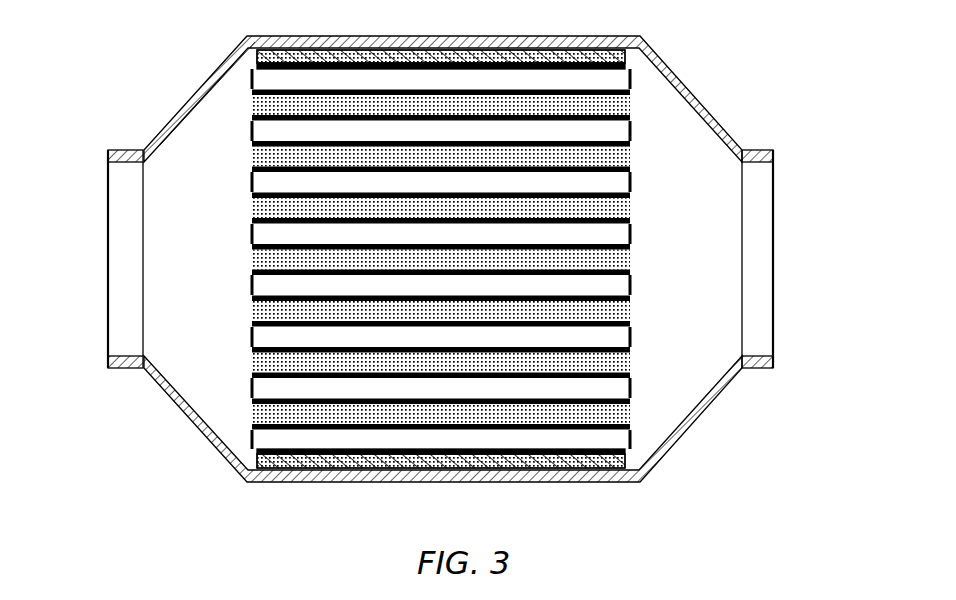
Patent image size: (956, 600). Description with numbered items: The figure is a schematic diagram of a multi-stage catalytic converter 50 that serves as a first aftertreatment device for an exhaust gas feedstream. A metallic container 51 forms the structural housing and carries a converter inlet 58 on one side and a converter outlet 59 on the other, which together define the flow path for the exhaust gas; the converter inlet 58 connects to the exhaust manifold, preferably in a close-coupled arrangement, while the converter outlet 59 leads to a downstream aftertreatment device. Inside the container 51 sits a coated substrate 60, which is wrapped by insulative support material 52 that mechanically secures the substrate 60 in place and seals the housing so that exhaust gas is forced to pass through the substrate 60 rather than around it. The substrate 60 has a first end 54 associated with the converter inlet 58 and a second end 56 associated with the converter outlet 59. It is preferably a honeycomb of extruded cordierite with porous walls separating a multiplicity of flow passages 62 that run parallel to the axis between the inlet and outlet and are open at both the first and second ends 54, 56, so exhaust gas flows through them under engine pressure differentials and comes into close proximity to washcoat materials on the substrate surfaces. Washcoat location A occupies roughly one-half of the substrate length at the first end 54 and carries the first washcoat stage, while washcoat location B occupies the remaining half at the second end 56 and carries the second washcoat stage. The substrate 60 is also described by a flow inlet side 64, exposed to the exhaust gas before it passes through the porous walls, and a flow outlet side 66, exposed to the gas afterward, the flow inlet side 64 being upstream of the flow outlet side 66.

The multi-stage catalytic converter 50 is at (415, 259).
The metallic container 51 is at (167, 117).
The insulative support material 52 is at (558, 474).
The first end 54 is at (443, 259).
The second end 56 is at (484, 372).
The converter inlet 58 is at (118, 236).
The converter outlet 59 is at (760, 237).
The coated substrate 60 is at (456, 212).
The flow passages 62 is at (637, 332).
The flow inlet side 64 is at (278, 219).
The flow outlet side 66 is at (606, 398).
The washcoat location A is at (272, 118).
The washcoat location B is at (609, 192).